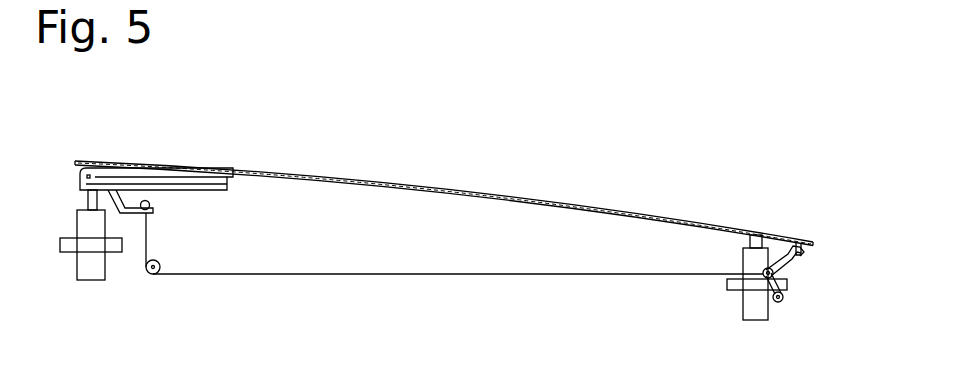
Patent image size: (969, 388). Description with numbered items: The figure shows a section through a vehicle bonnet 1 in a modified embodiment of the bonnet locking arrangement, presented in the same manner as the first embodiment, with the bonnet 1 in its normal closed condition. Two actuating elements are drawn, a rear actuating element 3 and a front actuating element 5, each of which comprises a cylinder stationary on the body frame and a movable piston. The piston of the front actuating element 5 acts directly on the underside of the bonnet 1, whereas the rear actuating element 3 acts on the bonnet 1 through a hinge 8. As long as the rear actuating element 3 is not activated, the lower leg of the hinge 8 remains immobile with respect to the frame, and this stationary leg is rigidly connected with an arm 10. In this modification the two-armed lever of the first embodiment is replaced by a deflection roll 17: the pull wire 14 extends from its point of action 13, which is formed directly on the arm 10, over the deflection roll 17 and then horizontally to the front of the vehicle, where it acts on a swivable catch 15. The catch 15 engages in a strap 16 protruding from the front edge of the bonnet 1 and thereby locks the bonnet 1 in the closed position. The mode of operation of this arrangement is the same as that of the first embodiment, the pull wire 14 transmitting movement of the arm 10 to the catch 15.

The bonnet 1 is at (412, 182).
The rear actuating element 3 is at (83, 263).
The front actuating element 5 is at (753, 302).
The hinge 8 is at (98, 162).
The arm 10 is at (122, 197).
The point of action 13 is at (145, 217).
The pull wire 14 is at (332, 275).
The catch 15 is at (793, 265).
The strap 16 is at (803, 250).
The deflection roll 17 is at (148, 277).